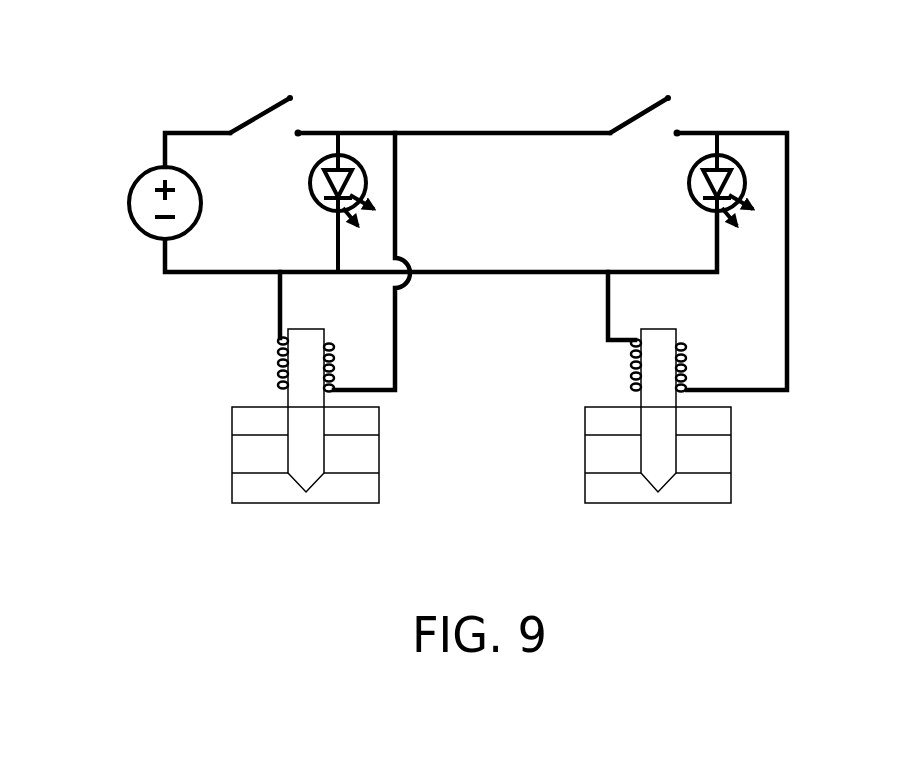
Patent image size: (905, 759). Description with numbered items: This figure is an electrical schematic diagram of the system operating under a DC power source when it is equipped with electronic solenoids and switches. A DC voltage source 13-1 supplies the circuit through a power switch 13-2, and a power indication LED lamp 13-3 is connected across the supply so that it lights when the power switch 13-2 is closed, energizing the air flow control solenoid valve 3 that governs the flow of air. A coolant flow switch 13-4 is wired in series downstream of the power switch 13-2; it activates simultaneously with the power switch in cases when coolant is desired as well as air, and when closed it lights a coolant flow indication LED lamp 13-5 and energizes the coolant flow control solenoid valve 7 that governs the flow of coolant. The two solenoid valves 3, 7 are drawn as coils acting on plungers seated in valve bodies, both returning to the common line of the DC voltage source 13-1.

The DC voltage source 13-1 is at (138, 160).
The power switch 13-2 is at (255, 100).
The power indication LED lamp 13-3 is at (364, 151).
The coolant flow switch 13-4 is at (628, 104).
The coolant flow indication LED lamp 13-5 is at (750, 152).
The air flow control solenoid valve 3 is at (268, 341).
The coolant flow control solenoid valve 7 is at (614, 355).